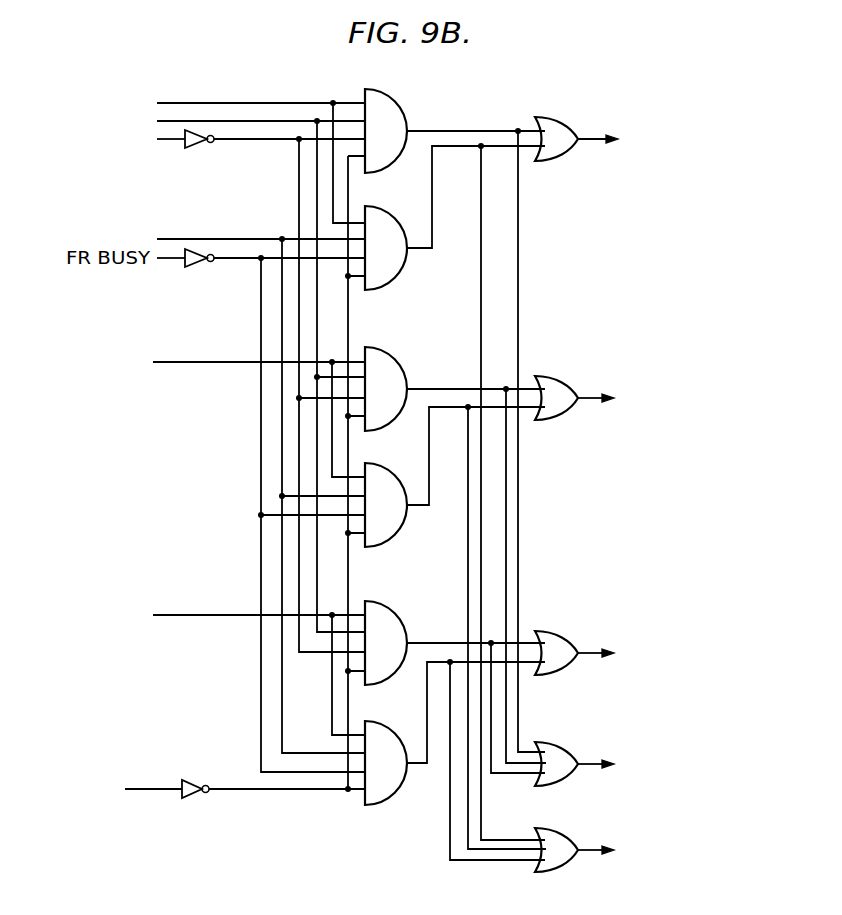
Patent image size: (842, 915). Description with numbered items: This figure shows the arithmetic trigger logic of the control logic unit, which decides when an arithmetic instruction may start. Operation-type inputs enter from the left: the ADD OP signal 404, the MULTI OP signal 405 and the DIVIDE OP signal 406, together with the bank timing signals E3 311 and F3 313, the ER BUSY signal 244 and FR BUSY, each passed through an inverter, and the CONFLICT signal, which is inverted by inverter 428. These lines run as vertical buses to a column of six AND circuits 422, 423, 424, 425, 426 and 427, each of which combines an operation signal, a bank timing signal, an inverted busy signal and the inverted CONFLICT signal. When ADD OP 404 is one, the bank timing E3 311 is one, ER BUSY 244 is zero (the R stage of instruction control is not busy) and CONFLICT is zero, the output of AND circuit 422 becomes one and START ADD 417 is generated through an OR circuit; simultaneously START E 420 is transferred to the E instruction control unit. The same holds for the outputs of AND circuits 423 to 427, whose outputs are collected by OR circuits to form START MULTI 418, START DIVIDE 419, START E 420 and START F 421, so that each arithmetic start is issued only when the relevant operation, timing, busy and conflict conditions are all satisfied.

The ADD OP signal 404 is at (181, 102).
The bank timing E3 311 is at (238, 121).
The ER BUSY signal 244 is at (173, 141).
The F3 bank timing signal 313 is at (220, 238).
The MULTI OP signal 405 is at (185, 361).
The DIVIDE OP signal 406 is at (172, 614).
The CONFLICT signal inverter 428 is at (168, 788).
The AND circuit 422 is at (406, 143).
The AND circuit 423 is at (406, 260).
The AND circuit 424 is at (406, 401).
The AND circuit 425 is at (406, 517).
The AND circuit 426 is at (406, 655).
The AND circuit 427 is at (406, 775).
The START ADD signal 417 is at (597, 132).
The START MULTI signal 418 is at (585, 392).
The START DIVIDE signal 419 is at (580, 650).
The START E signal 420 is at (584, 754).
The START F signal 421 is at (581, 851).